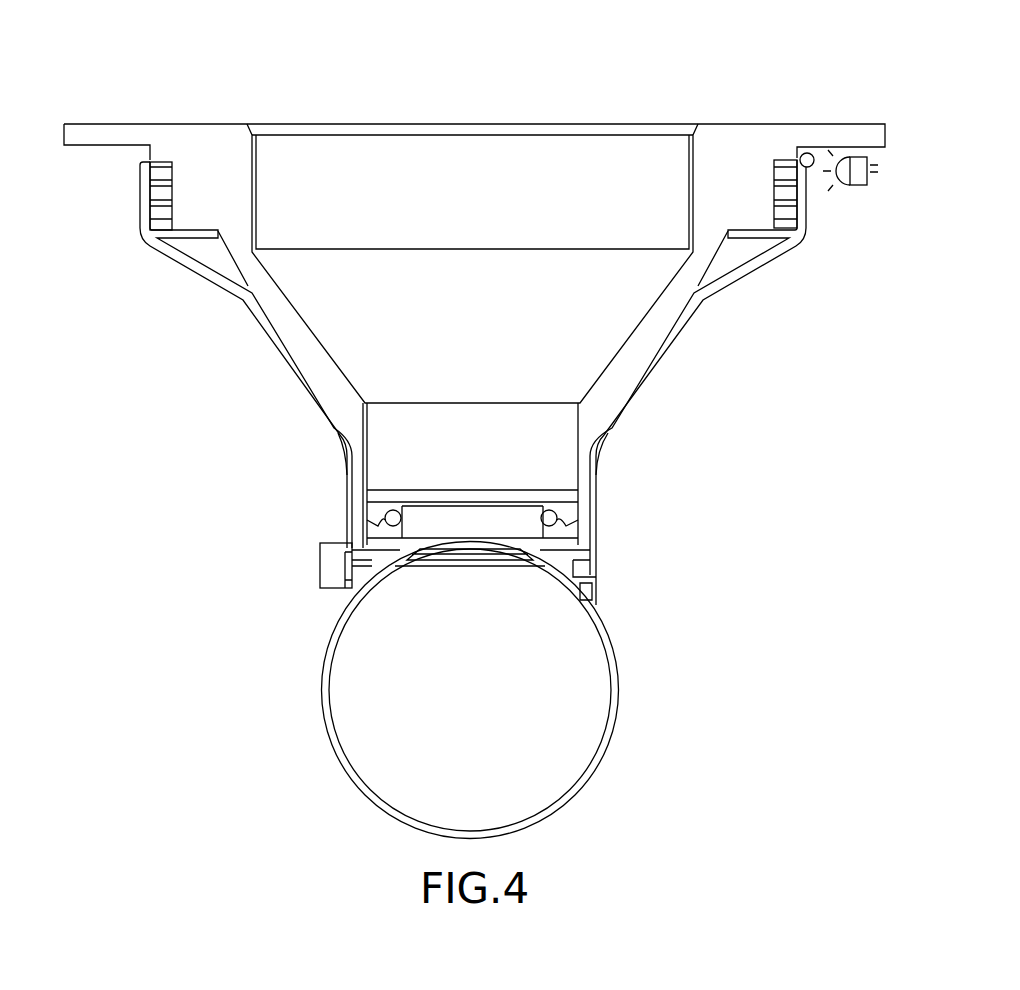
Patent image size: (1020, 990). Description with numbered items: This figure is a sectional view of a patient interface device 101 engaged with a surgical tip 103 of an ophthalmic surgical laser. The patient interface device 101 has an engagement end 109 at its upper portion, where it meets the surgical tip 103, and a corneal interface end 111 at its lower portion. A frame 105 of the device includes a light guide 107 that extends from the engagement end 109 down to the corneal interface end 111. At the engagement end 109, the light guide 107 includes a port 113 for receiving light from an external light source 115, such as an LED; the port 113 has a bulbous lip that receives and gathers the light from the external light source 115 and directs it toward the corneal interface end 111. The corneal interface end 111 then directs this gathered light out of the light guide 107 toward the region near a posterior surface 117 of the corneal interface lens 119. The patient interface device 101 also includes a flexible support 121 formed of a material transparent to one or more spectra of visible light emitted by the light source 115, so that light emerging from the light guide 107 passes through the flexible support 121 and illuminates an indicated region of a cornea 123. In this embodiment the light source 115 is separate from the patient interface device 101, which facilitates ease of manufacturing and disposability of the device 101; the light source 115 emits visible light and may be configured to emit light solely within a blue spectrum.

The patient interface device 101 is at (140, 198).
The surgical tip 103 is at (230, 122).
The frame 105 is at (282, 353).
The light guide 107 is at (759, 263).
The engagement end 109 is at (802, 212).
The corneal interface end 111 is at (594, 551).
The port 113 is at (807, 155).
The external light source 115 is at (848, 166).
The posterior surface 117 is at (526, 557).
The corneal interface lens 119 is at (540, 511).
The flexible support 121 is at (378, 516).
The cornea 123 is at (408, 557).